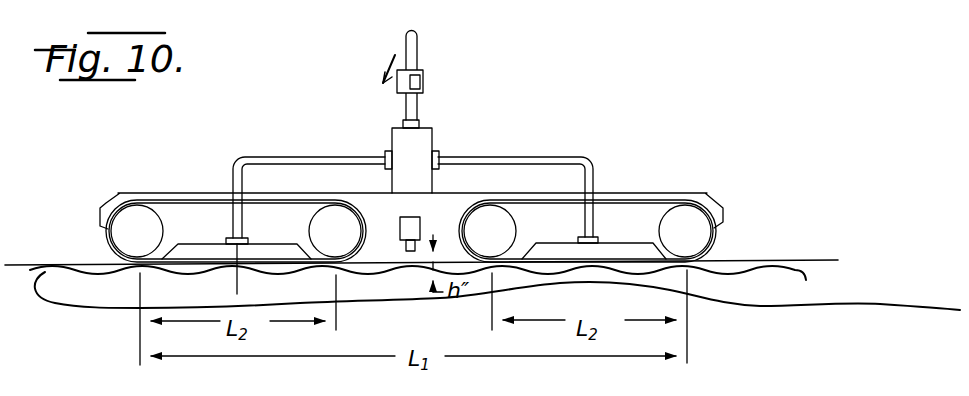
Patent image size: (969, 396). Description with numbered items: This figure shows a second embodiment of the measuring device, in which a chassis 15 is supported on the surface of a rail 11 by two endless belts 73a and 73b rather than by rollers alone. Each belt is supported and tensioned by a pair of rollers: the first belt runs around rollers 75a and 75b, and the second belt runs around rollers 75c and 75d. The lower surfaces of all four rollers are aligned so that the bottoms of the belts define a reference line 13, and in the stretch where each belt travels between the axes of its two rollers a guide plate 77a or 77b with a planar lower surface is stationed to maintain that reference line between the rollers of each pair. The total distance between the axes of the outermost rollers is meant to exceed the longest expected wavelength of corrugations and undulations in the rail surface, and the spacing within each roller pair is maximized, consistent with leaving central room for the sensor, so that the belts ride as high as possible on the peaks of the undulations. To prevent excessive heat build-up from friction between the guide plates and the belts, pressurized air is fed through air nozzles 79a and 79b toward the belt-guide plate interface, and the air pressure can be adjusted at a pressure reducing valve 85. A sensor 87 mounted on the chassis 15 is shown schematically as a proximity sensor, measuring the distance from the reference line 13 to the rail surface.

The rail 11 is at (262, 222).
The reference line 13 is at (736, 254).
The chassis 15 is at (740, 199).
The endless belt 73a is at (183, 195).
The endless belt 73b is at (640, 195).
The roller 75a is at (124, 220).
The roller 75b is at (332, 204).
The roller 75c is at (491, 207).
The roller 75d is at (712, 201).
The guide plate 77a is at (202, 252).
The guide plate 77b is at (618, 252).
The air nozzle 79a is at (272, 157).
The air nozzle 79b is at (508, 157).
The pressure reducing valve 85 is at (423, 82).
The sensor 87 is at (403, 228).